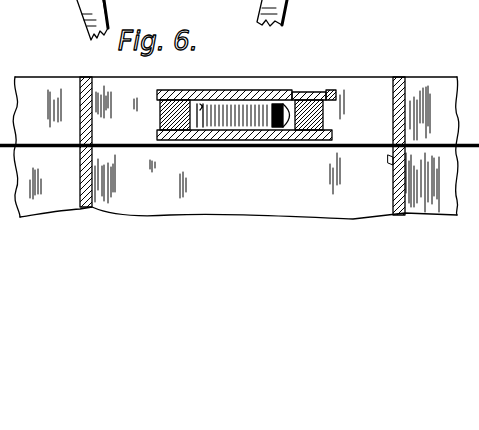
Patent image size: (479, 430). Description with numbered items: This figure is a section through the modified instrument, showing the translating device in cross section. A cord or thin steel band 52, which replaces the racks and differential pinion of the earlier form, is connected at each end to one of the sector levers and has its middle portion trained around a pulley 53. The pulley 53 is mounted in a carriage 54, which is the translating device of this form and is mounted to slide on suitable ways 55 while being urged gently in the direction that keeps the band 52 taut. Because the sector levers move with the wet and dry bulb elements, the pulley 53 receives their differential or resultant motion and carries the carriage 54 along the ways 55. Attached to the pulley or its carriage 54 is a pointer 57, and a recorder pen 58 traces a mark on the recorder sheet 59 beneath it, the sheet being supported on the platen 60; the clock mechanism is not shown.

The cord or thin steel band 52 is at (288, 100).
The pulley 53 is at (236, 113).
The carriage 54 is at (335, 94).
The ways 55 is at (165, 112).
The pointer 57 is at (302, 95).
The recorder pen 58 is at (243, 143).
The recorder sheet 59 is at (438, 143).
The platen 60 is at (357, 148).